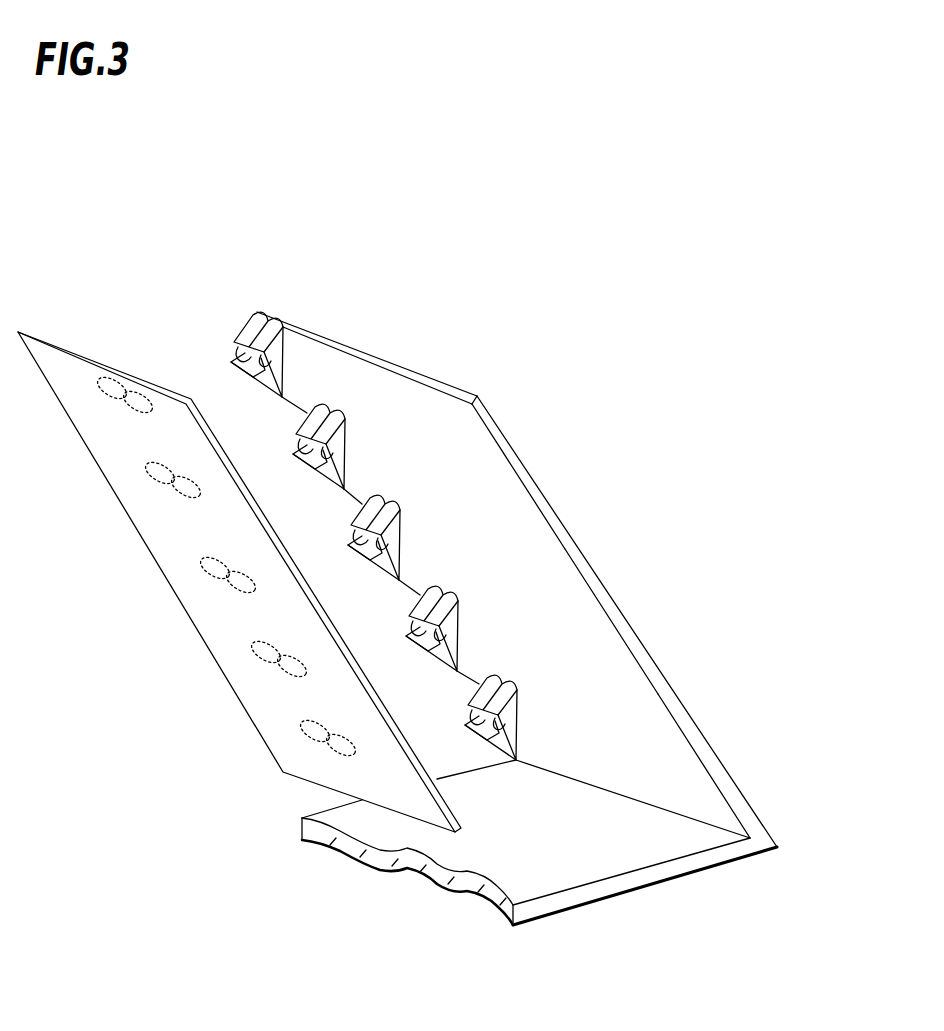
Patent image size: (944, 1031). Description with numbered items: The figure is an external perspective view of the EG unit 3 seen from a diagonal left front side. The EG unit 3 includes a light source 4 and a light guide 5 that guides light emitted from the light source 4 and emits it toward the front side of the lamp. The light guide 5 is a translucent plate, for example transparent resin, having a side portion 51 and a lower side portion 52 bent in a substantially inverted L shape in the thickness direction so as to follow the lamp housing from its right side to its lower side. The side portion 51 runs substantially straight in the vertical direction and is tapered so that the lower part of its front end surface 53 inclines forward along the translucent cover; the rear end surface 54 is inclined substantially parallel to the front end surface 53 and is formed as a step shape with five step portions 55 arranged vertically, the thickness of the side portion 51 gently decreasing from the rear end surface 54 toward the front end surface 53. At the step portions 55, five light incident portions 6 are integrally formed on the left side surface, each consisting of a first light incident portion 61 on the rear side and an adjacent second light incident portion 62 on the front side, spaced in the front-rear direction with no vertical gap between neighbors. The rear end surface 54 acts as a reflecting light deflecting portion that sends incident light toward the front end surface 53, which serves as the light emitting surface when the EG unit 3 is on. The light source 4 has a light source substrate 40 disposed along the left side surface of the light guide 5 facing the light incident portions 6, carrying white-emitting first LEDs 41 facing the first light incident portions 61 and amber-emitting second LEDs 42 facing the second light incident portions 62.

The EG unit 3 is at (509, 411).
The light source 4 is at (120, 368).
The light source substrate 40 is at (93, 432).
The first LED 41 is at (147, 475).
The second LED 42 is at (186, 493).
The light guide 5 is at (538, 480).
The side portion 51 is at (584, 563).
The lower side portion 52 is at (618, 889).
The front end surface 53 is at (661, 681).
The rear end surface 54 is at (281, 306).
The step portion 55 is at (285, 406).
The light incident portion 6 is at (238, 330).
The first light incident portion 61 is at (247, 360).
The second light incident portion 62 is at (289, 346).